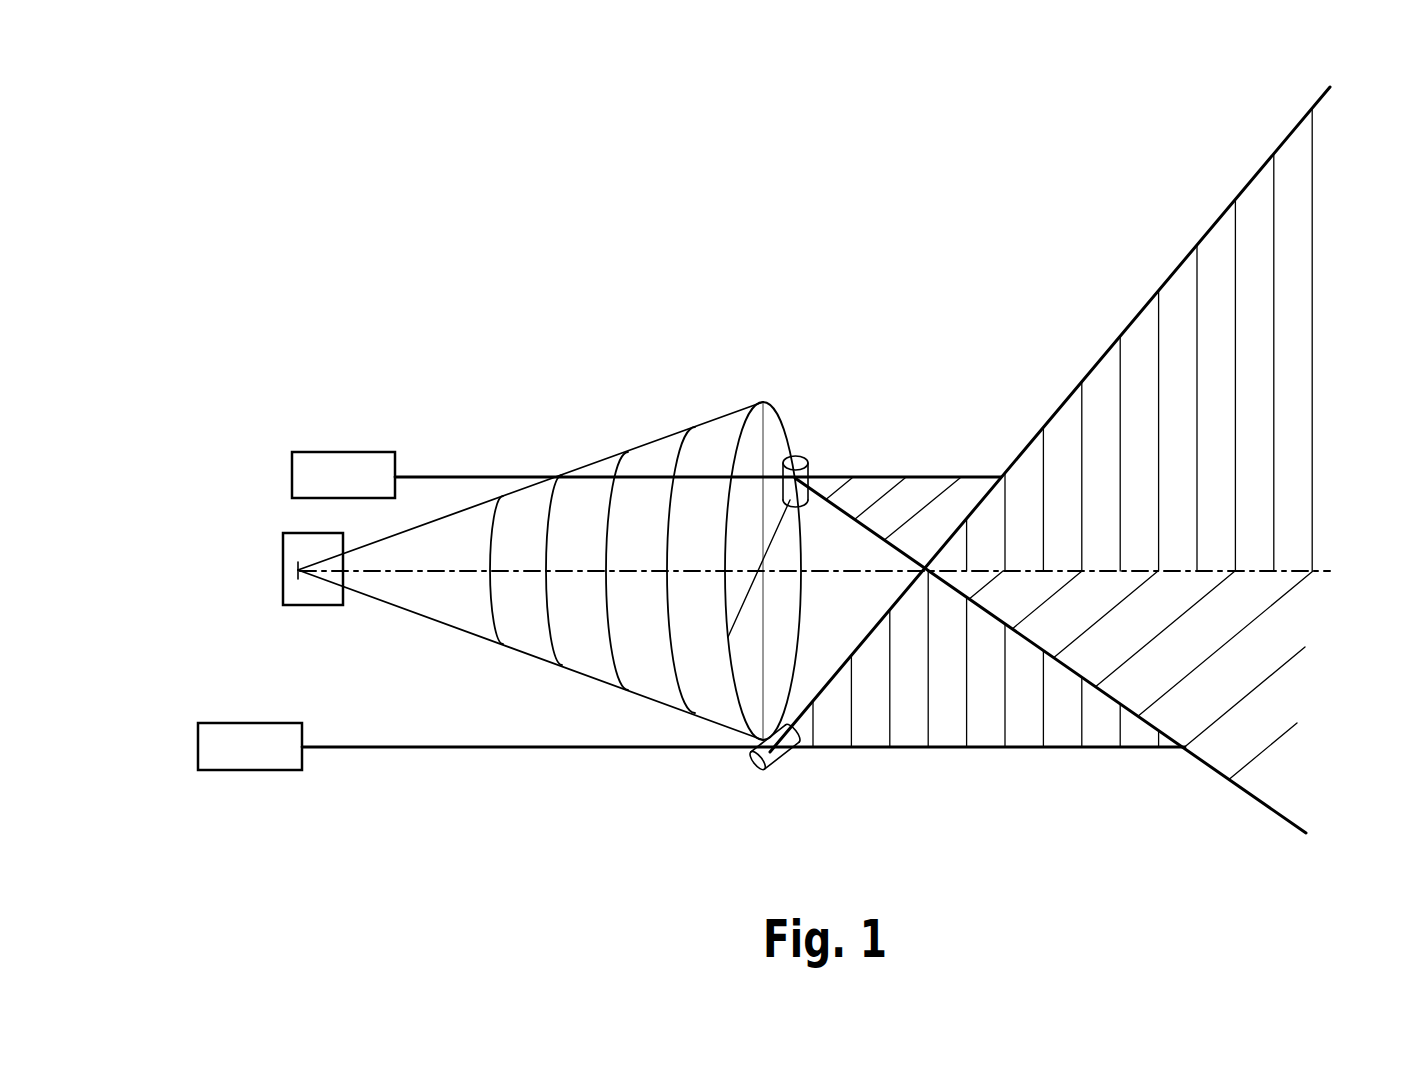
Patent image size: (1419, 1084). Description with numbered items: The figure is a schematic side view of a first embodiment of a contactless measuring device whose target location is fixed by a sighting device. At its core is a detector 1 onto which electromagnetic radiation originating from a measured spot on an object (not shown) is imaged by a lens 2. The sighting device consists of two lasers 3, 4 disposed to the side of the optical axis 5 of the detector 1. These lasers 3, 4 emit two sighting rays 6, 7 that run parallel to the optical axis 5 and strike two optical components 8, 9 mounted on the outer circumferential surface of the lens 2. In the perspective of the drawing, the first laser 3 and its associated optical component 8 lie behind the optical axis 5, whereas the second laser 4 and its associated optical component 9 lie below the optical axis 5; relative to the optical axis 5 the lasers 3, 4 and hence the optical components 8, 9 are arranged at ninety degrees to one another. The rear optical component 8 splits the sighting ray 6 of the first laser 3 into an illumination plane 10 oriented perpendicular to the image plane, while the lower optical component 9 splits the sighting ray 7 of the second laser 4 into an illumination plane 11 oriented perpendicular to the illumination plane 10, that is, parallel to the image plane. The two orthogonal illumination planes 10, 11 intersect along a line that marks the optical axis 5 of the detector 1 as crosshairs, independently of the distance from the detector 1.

The detector 1 is at (292, 543).
The lens 2 is at (757, 417).
The first laser 3 is at (317, 462).
The second laser 4 is at (218, 735).
The optical axis 5 is at (877, 568).
The sighting ray 6 is at (493, 477).
The sighting ray 7 is at (508, 747).
The optical component 8 is at (798, 457).
The optical component 9 is at (770, 762).
The illumination plane 10 is at (1257, 675).
The illumination plane 11 is at (1278, 333).